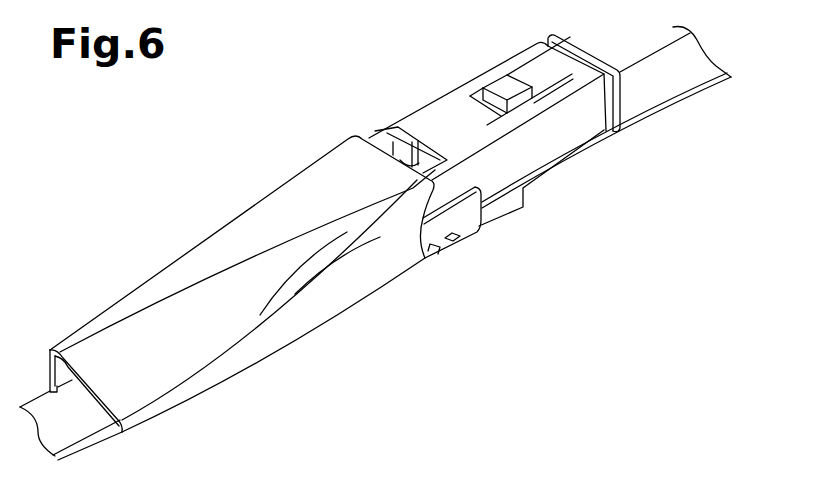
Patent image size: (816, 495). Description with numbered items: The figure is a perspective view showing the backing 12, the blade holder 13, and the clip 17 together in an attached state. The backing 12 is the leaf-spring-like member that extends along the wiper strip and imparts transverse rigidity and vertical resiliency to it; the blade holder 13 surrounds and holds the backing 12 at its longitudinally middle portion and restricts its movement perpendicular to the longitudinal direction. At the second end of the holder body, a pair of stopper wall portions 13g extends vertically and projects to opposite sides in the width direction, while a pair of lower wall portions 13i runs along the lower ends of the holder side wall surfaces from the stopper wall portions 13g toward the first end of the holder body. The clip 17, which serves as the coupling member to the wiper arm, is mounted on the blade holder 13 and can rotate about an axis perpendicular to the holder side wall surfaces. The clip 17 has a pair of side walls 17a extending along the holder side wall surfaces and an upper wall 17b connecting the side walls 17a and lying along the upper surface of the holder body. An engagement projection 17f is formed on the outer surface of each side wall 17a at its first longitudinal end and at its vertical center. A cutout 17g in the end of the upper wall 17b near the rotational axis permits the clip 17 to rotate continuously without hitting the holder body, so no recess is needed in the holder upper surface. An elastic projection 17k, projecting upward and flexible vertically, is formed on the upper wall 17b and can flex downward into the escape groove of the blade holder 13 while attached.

The backing 12 is at (70, 430).
The blade holder 13 is at (319, 160).
The stopper wall portions 13g is at (612, 95).
The lower wall portions 13i is at (588, 153).
The clip 17 is at (464, 85).
The side walls 17a is at (543, 158).
The upper wall 17b is at (412, 122).
The engagement projection 17f is at (473, 218).
The cutout 17g is at (450, 140).
The elastic projection 17k is at (505, 82).